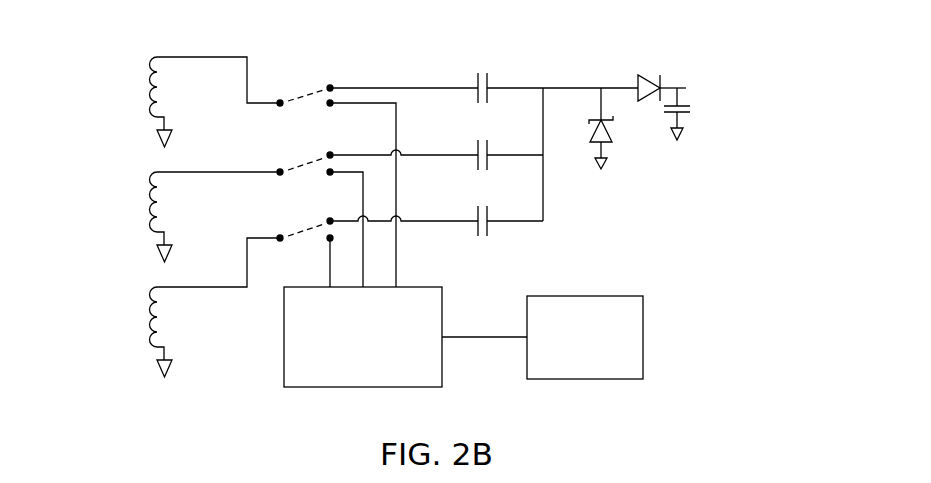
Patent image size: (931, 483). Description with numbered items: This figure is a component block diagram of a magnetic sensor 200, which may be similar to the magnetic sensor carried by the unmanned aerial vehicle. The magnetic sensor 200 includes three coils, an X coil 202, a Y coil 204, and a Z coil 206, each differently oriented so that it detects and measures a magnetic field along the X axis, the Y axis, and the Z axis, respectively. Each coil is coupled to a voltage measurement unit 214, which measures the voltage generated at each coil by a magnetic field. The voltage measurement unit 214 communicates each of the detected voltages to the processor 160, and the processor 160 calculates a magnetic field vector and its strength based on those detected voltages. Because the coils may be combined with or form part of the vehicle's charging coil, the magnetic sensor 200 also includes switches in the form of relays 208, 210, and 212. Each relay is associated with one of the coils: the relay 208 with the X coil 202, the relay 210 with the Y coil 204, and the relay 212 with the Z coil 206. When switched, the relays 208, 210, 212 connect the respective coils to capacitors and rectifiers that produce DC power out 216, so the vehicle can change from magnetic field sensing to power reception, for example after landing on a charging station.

The magnetic sensor 200 is at (112, 405).
The X coil 202 is at (152, 73).
The Y coil 204 is at (152, 188).
The Z coil 206 is at (152, 303).
The relay 208 is at (296, 101).
The relay 210 is at (296, 166).
The relay 212 is at (296, 233).
The voltage measurement unit 214 is at (363, 337).
The processor 160 is at (585, 337).
The DC power out 216 is at (697, 93).